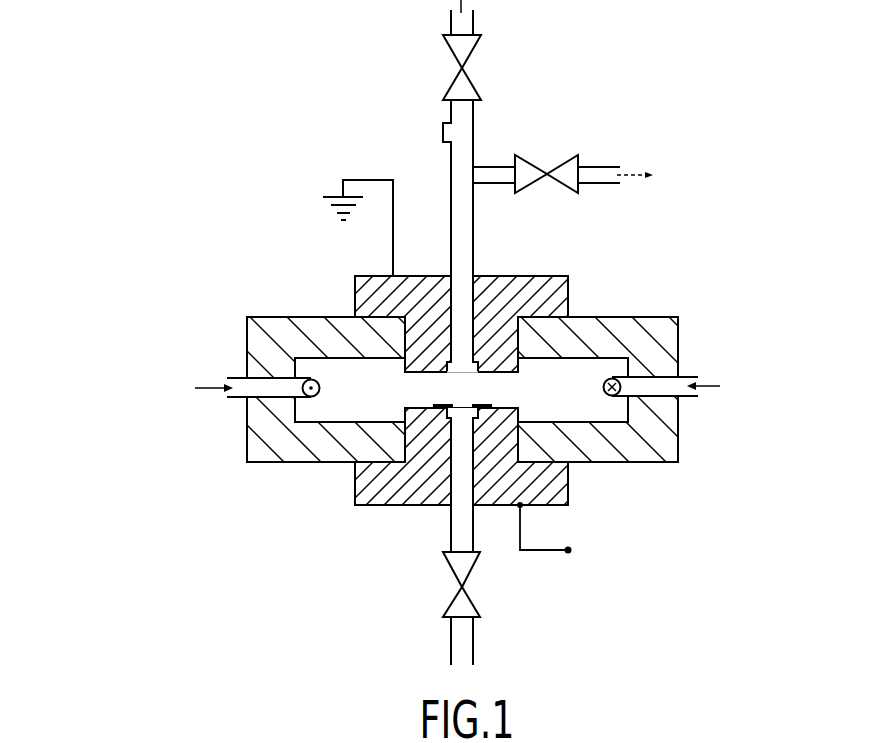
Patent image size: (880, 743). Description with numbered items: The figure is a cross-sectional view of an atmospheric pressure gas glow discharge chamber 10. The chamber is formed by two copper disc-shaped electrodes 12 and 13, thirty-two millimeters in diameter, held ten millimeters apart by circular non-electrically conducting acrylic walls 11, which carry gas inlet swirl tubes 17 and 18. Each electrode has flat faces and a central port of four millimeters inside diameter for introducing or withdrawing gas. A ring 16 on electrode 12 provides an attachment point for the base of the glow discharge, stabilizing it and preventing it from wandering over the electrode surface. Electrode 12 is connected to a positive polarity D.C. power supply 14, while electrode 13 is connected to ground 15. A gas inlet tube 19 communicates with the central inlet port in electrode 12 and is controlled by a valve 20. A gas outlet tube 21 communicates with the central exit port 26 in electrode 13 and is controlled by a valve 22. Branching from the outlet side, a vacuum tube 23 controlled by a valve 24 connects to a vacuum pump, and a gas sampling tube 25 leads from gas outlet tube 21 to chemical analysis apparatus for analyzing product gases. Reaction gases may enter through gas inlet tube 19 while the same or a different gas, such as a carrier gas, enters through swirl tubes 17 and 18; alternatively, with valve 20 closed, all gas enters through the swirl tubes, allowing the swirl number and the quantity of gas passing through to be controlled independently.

The glow discharge chamber 10 is at (458, 384).
The acrylic walls 11 is at (622, 463).
The electrode 12 is at (517, 410).
The electrode 13 is at (568, 282).
The D.C. power supply 14 is at (552, 552).
The ground 15 is at (330, 205).
The ring 16 is at (445, 406).
The gas inlet swirl tube 17 is at (233, 400).
The gas inlet swirl tube 18 is at (688, 399).
The gas inlet tube 19 is at (451, 533).
The valve 20 is at (467, 606).
The gas outlet tube 21 is at (473, 117).
The valve 22 is at (472, 46).
The vacuum tube 23 is at (497, 185).
The valve 24 is at (566, 175).
The gas sampling tube 25 is at (443, 133).
The central exit port 26 is at (458, 375).